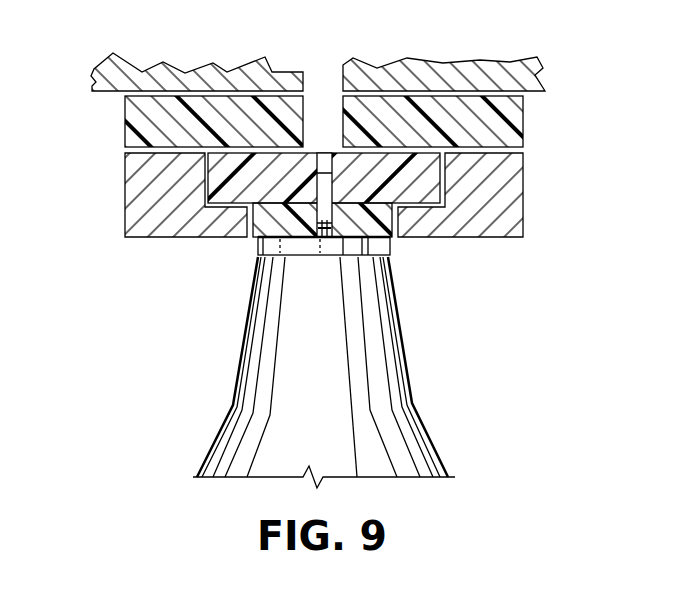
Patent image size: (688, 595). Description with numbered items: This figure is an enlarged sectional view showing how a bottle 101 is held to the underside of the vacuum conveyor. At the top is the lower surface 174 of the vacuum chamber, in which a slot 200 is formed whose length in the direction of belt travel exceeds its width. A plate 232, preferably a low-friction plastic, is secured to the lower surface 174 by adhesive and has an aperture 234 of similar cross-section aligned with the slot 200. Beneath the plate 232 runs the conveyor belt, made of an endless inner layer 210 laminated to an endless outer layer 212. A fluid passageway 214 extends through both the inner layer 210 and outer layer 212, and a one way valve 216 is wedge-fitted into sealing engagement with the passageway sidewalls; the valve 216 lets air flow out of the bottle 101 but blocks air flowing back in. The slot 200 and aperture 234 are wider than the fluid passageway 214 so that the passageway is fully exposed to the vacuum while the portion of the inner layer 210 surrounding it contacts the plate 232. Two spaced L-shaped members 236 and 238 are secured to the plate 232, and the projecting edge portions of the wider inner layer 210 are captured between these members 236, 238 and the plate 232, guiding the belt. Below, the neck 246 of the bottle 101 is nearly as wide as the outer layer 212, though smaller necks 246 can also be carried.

The lower surface 174 is at (108, 88).
The slot 200 is at (330, 75).
The aperture 234 is at (333, 103).
The plate 232 is at (135, 127).
The L-shaped member 236 is at (132, 222).
The L-shaped member 238 is at (472, 222).
The endless inner layer 210 is at (225, 192).
The endless outer layer 212 is at (270, 225).
The fluid passageway 214 is at (322, 163).
The one way valve 216 is at (323, 227).
The neck 246 is at (333, 333).
The bottle 101 is at (398, 448).